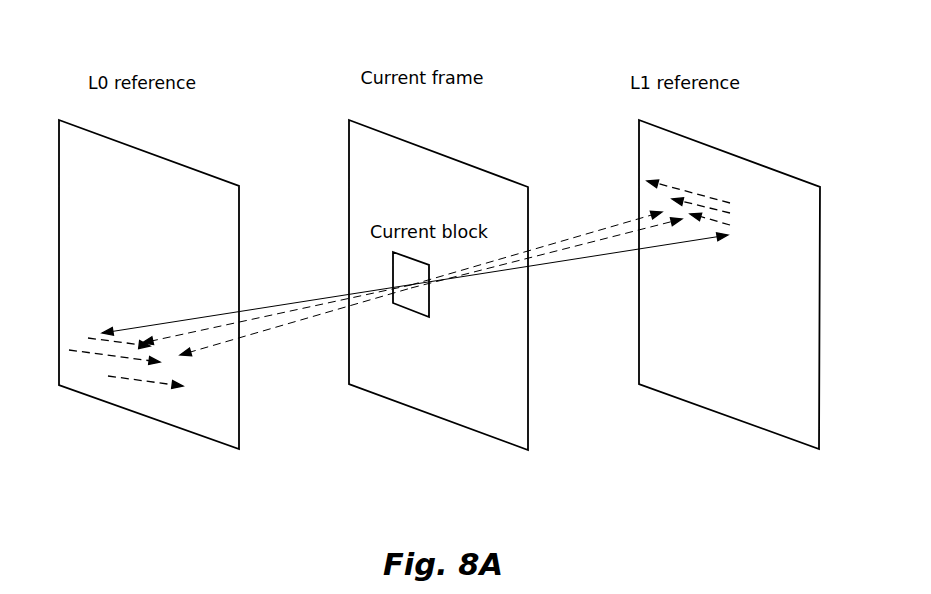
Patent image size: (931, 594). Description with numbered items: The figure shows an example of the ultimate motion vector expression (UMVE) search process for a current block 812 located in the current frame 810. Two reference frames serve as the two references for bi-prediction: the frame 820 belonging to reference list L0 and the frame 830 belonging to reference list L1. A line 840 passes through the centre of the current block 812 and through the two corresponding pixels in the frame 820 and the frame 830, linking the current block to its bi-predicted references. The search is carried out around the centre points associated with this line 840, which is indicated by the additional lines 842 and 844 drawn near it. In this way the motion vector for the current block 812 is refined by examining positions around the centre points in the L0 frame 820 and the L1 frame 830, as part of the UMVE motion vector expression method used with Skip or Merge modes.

The current frame 810 is at (487, 435).
The current block 812 is at (412, 310).
The frame in reference list L0 820 is at (192, 430).
The frame in reference list L1 830 is at (777, 435).
The line 840 is at (555, 258).
The line 842 is at (588, 239).
The line 844 is at (582, 233).